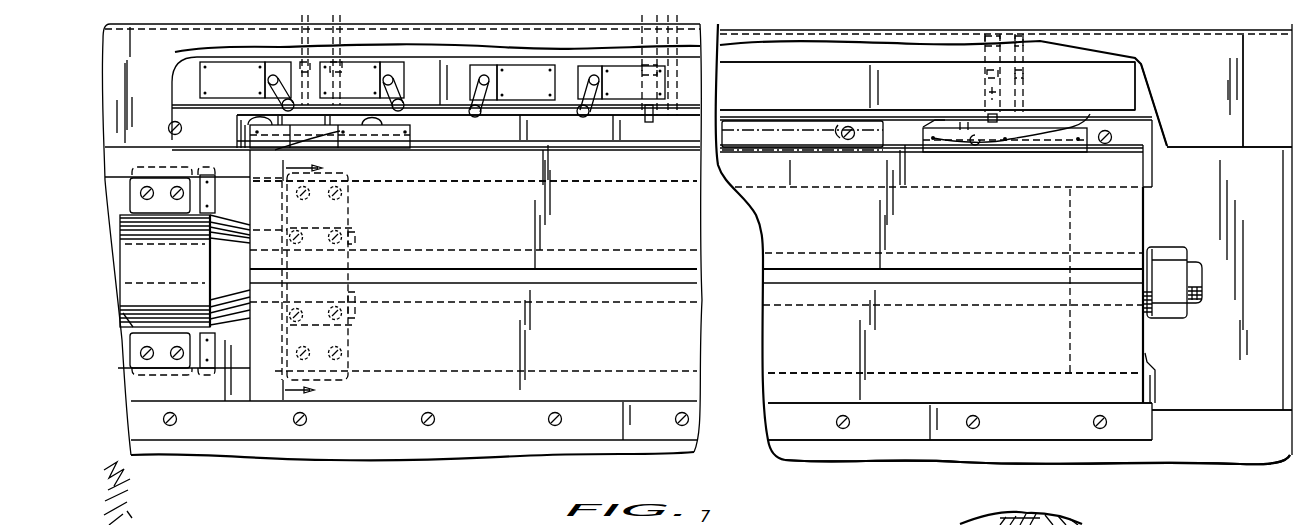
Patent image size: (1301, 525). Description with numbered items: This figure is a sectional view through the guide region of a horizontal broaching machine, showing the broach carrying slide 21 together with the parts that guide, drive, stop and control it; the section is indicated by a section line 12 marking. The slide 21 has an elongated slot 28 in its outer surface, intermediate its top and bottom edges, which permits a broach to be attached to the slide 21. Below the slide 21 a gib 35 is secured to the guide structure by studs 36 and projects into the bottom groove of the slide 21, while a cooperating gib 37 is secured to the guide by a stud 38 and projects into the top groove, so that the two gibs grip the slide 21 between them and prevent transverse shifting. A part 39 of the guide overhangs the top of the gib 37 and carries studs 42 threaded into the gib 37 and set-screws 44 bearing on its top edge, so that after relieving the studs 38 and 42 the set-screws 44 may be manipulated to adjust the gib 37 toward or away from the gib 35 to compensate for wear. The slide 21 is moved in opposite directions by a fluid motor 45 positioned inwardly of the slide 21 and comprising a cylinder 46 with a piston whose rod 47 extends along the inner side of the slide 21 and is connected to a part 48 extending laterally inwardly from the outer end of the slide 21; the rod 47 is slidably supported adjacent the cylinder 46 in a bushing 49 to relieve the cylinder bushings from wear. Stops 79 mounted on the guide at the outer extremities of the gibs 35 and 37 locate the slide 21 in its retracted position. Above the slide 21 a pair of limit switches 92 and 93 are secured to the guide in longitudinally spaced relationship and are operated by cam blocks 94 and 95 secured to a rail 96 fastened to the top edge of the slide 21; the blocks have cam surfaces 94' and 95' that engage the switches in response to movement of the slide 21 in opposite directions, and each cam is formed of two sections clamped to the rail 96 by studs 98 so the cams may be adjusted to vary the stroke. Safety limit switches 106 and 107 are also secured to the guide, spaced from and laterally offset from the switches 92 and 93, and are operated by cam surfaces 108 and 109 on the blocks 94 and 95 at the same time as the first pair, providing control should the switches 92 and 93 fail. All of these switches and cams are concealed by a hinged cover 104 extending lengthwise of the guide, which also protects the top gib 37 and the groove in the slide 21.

The section line 12 is at (313, 275).
The broach carrying slide 21 is at (1133, 241).
The elongated slot 28 is at (1023, 282).
The gib 35 is at (1142, 438).
The studs 36 is at (1104, 416).
The cooperating gib 37 is at (1140, 131).
The stud 38 is at (1155, 118).
The part of the guide 39 is at (1125, 82).
The studs 42 is at (987, 97).
The set-screw 44 is at (1027, 99).
The fluid motor 45 is at (153, 277).
The cylinder 46 is at (118, 322).
The rod 47 is at (600, 250).
The part 48 is at (1068, 213).
The bushing 49 is at (360, 241).
The stops 79 is at (1157, 400).
The limit switch 92 is at (343, 88).
The limit switch 93 is at (518, 89).
The cam block 94 is at (307, 145).
The cam surface 94' is at (468, 125).
The cam block 95 is at (904, 131).
The cam surface 95' is at (916, 130).
The rail 96 is at (770, 143).
The studs 98 is at (257, 134).
The cover 104 is at (1256, 127).
The safety limit switch 106 is at (245, 88).
The safety limit switch 107 is at (610, 90).
The cam surface 108 is at (253, 117).
The cam surface 109 is at (888, 110).